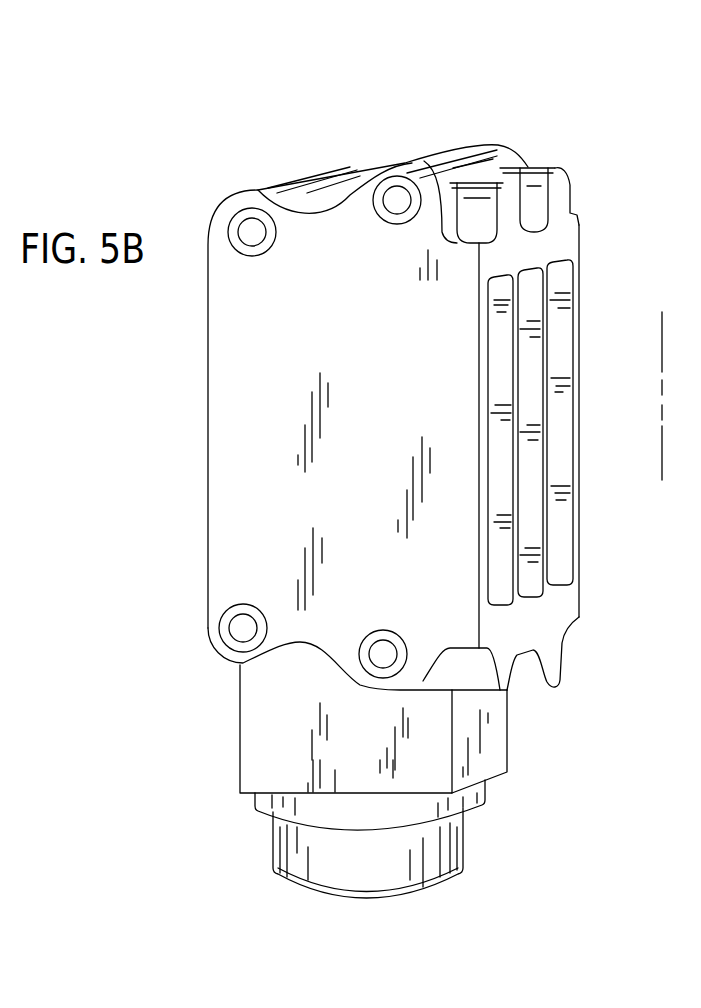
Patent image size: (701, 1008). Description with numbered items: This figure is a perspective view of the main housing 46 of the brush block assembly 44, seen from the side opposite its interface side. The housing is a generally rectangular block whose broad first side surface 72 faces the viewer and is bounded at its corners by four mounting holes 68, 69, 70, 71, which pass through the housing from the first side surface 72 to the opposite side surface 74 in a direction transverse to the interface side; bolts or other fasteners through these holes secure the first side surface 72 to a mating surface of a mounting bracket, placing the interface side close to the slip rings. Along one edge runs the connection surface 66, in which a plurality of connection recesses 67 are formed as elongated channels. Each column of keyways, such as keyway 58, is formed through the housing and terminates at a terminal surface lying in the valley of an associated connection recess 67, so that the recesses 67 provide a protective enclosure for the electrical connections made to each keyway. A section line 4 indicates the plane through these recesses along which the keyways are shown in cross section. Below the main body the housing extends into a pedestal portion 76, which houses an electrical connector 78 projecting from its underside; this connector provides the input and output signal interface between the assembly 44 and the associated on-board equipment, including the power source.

The section line 4- 4 is at (662, 312).
The brush block assembly 44 is at (126, 176).
The main housing 46 is at (476, 138).
The keyway 58 is at (198, 335).
The connection surface 66 is at (563, 242).
The connection recesses 67 is at (532, 517).
The mounting hole 68 is at (252, 232).
The mounting hole 69 is at (397, 200).
The mounting hole 70 is at (243, 628).
The mounting hole 71 is at (383, 654).
The first side surface 72 is at (270, 438).
The opposite side surface 74 is at (533, 144).
The pedestal portion 76 is at (277, 732).
The electrical connector 78 is at (297, 848).